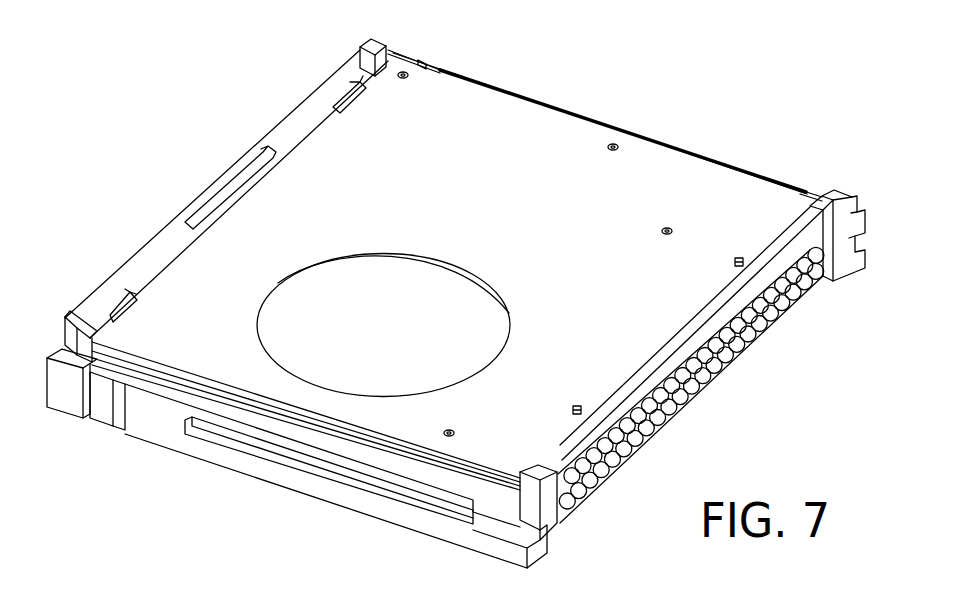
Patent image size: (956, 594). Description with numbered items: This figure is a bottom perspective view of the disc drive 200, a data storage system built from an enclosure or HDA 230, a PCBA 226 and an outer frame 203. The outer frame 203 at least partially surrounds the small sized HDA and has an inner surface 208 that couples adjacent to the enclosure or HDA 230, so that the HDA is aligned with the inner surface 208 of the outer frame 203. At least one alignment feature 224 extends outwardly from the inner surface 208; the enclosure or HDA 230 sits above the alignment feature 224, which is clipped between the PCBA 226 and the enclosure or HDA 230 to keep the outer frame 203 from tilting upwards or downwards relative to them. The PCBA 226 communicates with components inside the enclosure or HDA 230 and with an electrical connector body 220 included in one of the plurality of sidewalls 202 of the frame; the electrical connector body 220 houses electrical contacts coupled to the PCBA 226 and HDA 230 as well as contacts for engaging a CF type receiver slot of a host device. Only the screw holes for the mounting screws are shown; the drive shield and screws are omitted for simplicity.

The disc drive 200 is at (717, 85).
The sidewalls 202 is at (198, 200).
The outer frame 203 is at (327, 493).
The inner surface 208 is at (293, 137).
The electrical connector body 220 is at (738, 362).
The alignment feature 224 is at (322, 90).
The PCBA 226 is at (498, 118).
The enclosure or HDA 230 is at (154, 367).